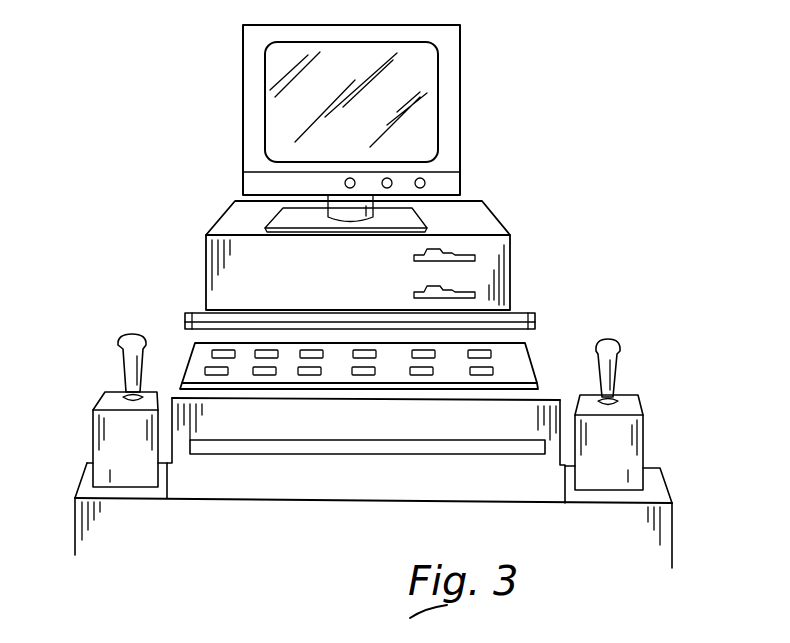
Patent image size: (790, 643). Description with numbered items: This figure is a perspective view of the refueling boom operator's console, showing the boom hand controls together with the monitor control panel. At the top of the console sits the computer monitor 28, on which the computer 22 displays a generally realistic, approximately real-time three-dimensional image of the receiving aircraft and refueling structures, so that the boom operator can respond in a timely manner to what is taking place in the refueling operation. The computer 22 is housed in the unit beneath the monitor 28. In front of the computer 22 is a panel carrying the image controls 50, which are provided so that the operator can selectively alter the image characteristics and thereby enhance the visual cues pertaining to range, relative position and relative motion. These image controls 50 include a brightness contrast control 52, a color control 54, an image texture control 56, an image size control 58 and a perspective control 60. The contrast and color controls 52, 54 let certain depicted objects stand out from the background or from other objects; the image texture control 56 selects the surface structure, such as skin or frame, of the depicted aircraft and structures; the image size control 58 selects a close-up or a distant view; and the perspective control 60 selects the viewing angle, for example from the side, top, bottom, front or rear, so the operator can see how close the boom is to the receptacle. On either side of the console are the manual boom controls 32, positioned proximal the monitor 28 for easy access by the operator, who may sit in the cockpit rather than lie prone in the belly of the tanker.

The computer monitor 28 is at (461, 55).
The brightness contrast control 52 is at (426, 180).
The computer 22 is at (484, 202).
The image size control 58 is at (223, 348).
The perspective control 60 is at (201, 364).
The image texture control 56 is at (434, 352).
The color control 54 is at (489, 352).
The image controls 50 is at (384, 301).
The manual boom controls 32 is at (620, 341).